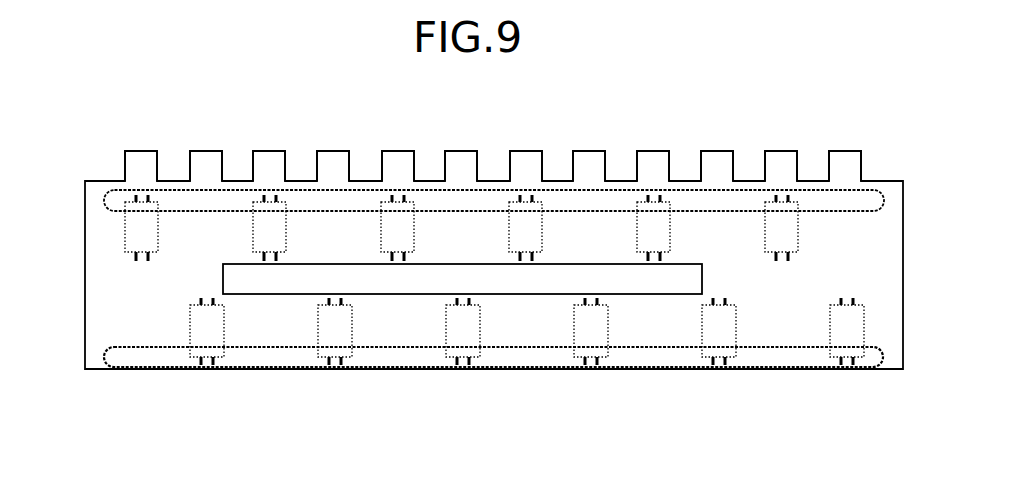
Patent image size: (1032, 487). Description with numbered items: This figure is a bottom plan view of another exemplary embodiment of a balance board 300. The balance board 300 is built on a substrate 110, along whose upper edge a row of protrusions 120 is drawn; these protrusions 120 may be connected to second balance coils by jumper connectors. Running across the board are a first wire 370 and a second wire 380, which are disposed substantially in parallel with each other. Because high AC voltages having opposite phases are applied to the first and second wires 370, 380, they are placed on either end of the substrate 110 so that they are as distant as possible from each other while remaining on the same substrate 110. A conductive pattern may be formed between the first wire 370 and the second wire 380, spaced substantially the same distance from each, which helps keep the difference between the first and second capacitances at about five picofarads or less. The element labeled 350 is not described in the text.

The substrate 110 is at (890, 341).
The protrusions 120 is at (142, 158).
The balance board 300 is at (381, 380).
The lower heat pipe 350 is at (253, 330).
The first wire 370 is at (235, 200).
The second wire 380 is at (643, 294).